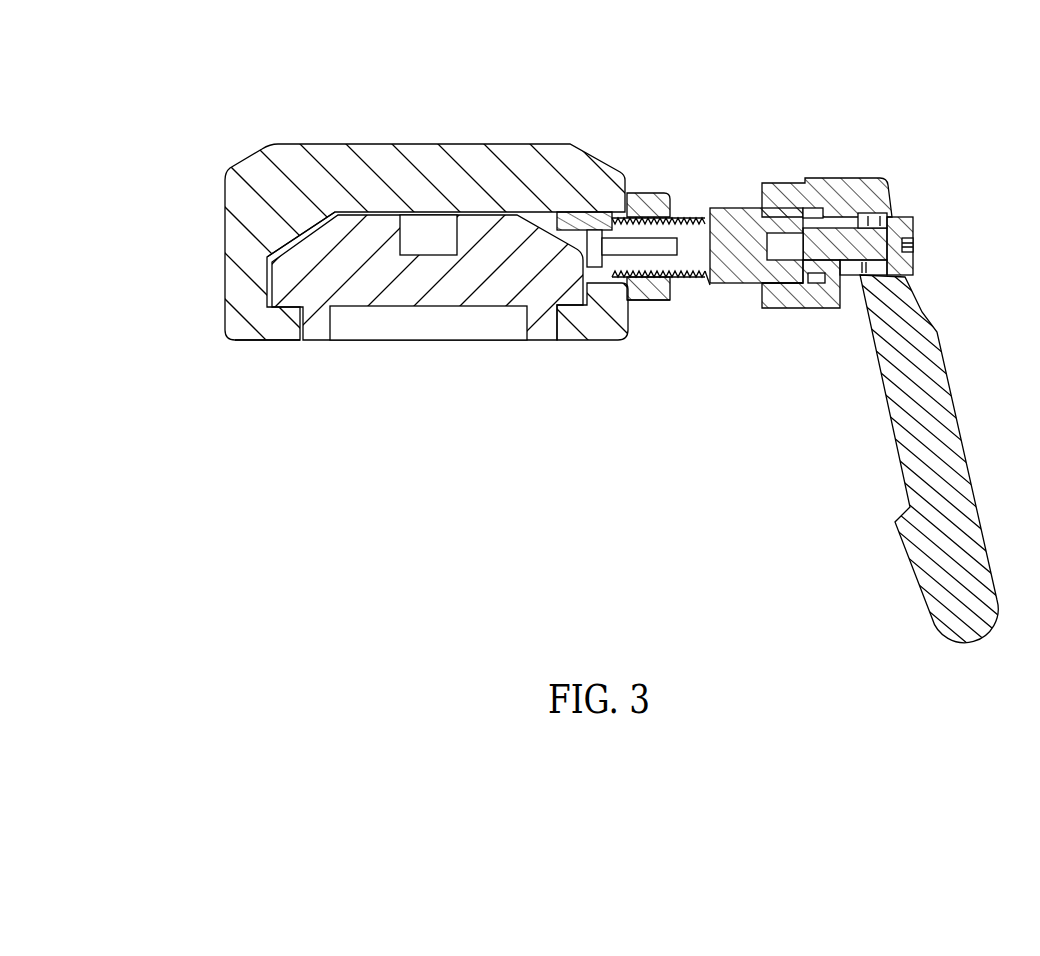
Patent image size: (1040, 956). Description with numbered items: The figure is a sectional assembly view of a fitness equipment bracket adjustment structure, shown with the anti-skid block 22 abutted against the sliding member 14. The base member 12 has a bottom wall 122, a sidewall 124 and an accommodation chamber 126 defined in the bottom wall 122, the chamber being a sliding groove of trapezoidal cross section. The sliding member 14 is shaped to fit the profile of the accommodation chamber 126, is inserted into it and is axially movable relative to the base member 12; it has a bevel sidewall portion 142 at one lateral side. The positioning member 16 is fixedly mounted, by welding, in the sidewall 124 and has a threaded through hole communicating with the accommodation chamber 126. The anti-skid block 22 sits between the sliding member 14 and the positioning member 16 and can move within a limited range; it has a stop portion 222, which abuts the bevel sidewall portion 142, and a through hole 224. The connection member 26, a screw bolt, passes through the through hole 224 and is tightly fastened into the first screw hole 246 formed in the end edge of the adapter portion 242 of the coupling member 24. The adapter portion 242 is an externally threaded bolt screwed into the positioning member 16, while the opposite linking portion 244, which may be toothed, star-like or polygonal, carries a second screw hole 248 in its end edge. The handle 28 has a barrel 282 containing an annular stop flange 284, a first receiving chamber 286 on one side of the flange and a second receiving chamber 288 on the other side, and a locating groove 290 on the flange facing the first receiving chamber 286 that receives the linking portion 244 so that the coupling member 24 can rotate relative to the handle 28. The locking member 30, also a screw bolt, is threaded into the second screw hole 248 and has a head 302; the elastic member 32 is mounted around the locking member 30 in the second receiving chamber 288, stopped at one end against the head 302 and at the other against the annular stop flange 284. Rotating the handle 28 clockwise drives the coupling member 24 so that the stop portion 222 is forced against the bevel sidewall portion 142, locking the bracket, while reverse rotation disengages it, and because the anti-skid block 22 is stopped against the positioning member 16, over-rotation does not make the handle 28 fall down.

The base member 12 is at (430, 162).
The bottom wall 122 is at (257, 342).
The sidewall 124 is at (626, 285).
The accommodation chamber 126 is at (425, 345).
The sliding member 14 is at (317, 342).
The bevel sidewall portion 142 is at (290, 240).
The positioning member 16 is at (641, 194).
The anti-skid block 22 is at (606, 246).
The stop portion 222 is at (580, 213).
The through hole 224 is at (612, 256).
The coupling member 24 is at (797, 161).
The adapter portion 242 is at (690, 216).
The linking portion 244 is at (820, 292).
The first screw hole 246 is at (701, 278).
The second screw hole 248 is at (775, 232).
The connection member 26 is at (650, 302).
The handle 28 is at (877, 217).
The barrel 282 is at (832, 192).
The annular stop flange 284 is at (852, 218).
The first receiving chamber 286 is at (812, 209).
The second receiving chamber 288 is at (886, 226).
The locating groove 290 is at (836, 290).
The locking member 30 is at (928, 457).
The head 302 is at (914, 262).
The elastic member 32 is at (865, 276).